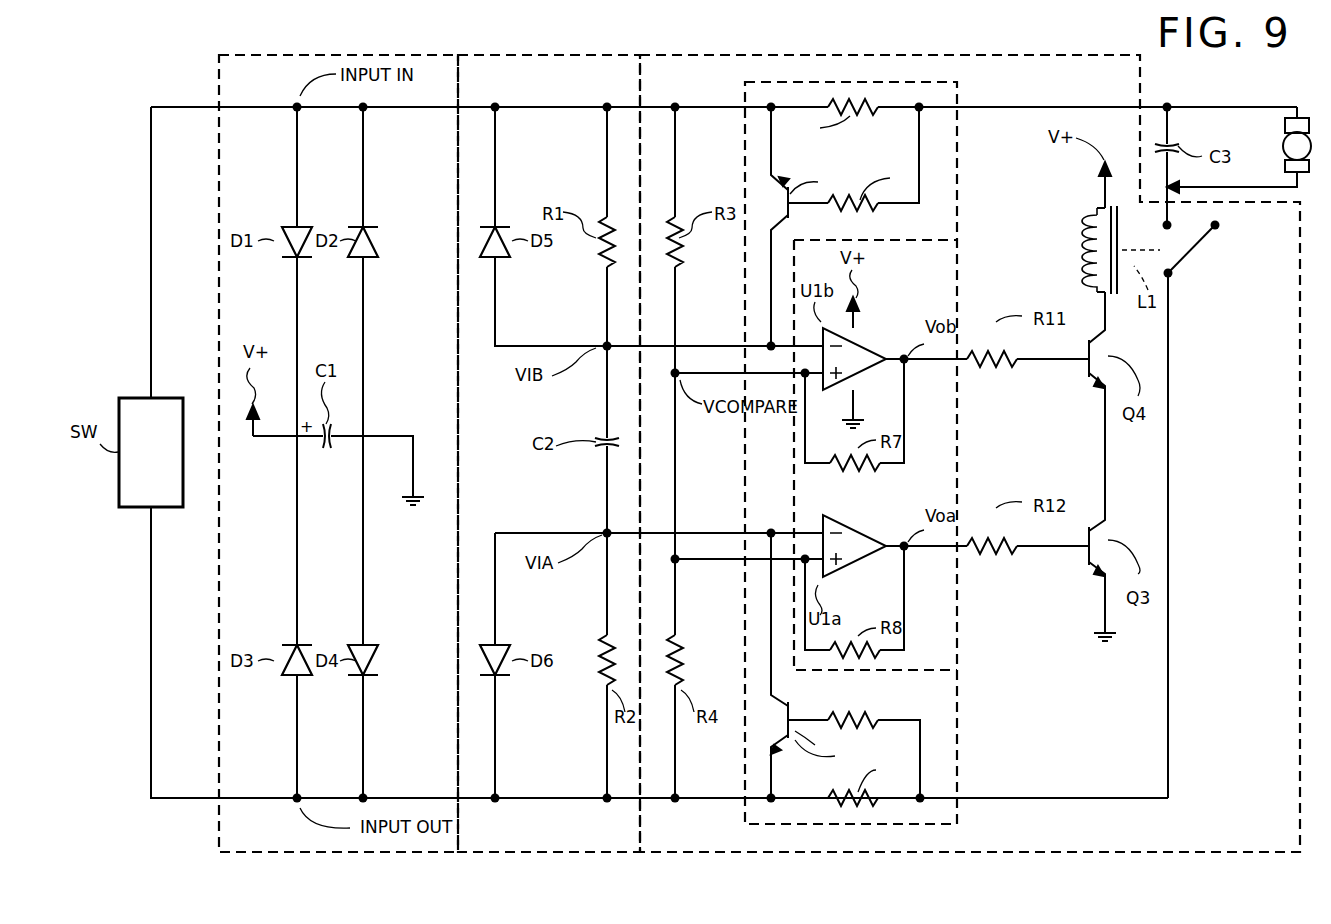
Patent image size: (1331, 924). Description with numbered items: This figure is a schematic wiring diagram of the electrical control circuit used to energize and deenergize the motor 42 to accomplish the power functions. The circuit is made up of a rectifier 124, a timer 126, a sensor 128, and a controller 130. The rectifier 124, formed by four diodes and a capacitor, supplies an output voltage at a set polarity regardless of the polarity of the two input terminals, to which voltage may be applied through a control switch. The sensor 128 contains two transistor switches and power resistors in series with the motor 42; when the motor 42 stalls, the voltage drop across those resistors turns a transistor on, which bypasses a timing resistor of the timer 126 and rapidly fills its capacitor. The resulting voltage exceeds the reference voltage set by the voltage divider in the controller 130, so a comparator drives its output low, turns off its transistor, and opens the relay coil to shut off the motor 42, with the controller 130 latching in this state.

The rectifier 124 is at (268, 55).
The timer 126 is at (478, 55).
The controller 130 is at (861, 55).
The sensor 128 is at (959, 201).
The motor 42 is at (1305, 118).